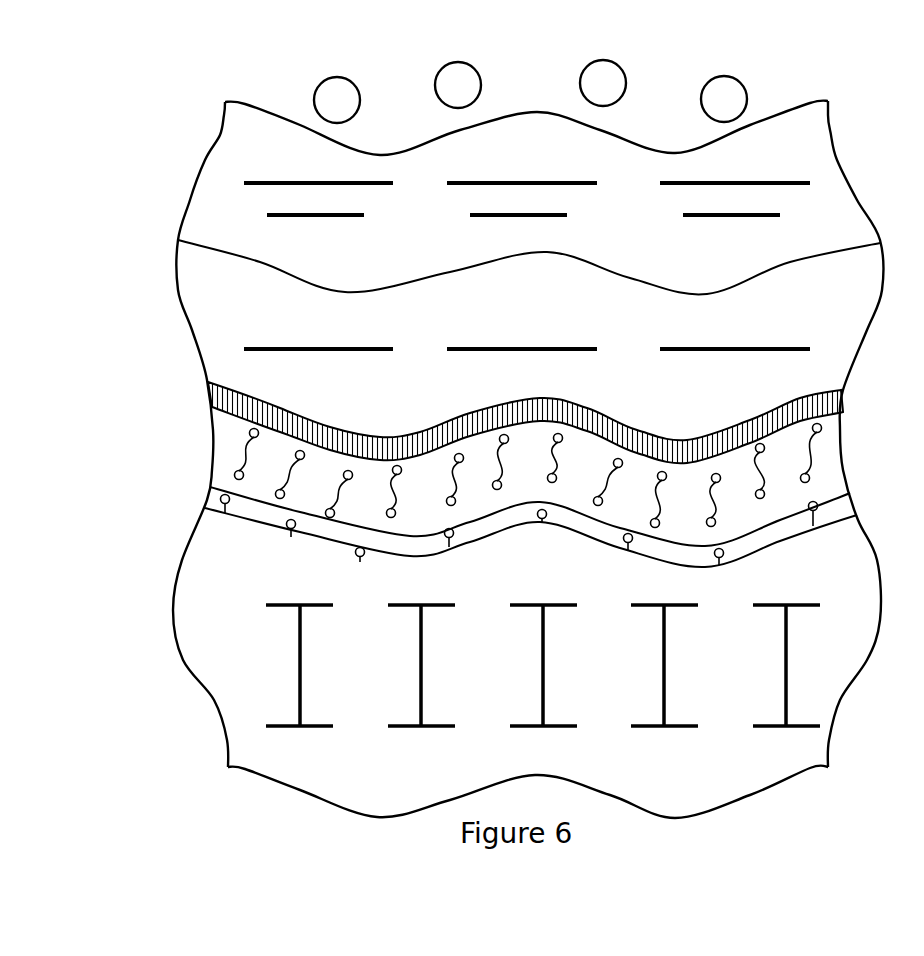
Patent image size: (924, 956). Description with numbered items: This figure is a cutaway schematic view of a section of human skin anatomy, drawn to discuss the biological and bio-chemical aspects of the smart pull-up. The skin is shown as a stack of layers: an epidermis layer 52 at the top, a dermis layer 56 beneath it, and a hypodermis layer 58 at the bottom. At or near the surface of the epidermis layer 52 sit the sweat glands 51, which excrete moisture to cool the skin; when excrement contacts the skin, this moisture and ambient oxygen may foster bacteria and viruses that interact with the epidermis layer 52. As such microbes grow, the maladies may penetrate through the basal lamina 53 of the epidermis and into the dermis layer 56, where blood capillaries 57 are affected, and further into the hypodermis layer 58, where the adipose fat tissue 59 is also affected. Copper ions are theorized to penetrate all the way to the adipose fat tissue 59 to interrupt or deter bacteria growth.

The sweat glands 51 is at (436, 78).
The epidermis layer 52 is at (158, 100).
The basal lamina 53 is at (831, 172).
The dermis layer 56 is at (158, 407).
The blood capillaries 57 is at (812, 453).
The hypodermis layer 58 is at (153, 509).
The adipose fat tissue 59 is at (666, 665).